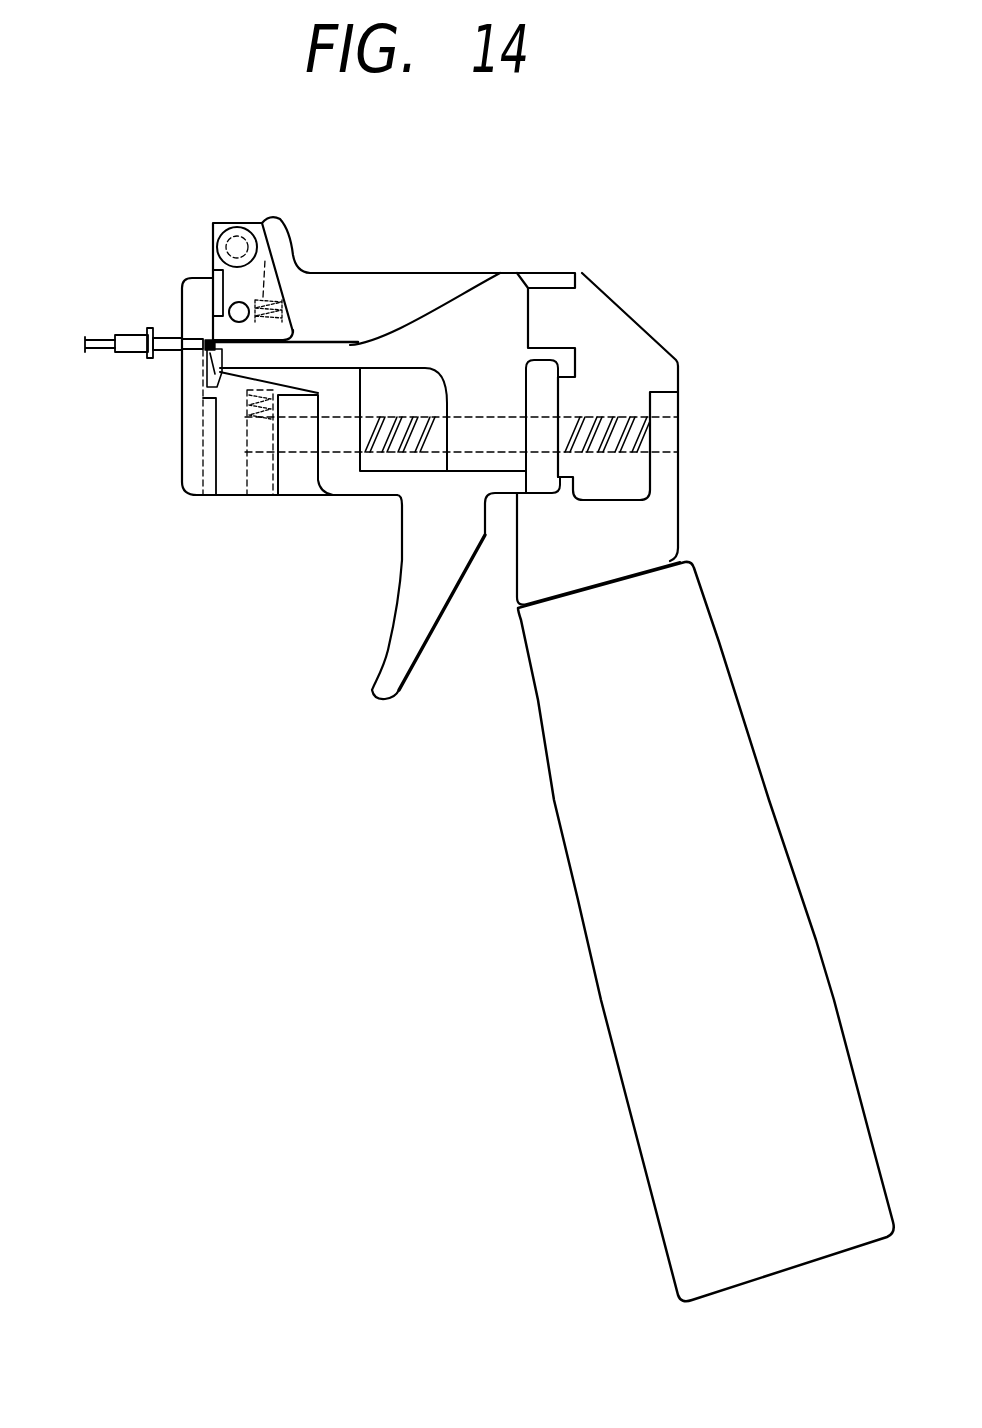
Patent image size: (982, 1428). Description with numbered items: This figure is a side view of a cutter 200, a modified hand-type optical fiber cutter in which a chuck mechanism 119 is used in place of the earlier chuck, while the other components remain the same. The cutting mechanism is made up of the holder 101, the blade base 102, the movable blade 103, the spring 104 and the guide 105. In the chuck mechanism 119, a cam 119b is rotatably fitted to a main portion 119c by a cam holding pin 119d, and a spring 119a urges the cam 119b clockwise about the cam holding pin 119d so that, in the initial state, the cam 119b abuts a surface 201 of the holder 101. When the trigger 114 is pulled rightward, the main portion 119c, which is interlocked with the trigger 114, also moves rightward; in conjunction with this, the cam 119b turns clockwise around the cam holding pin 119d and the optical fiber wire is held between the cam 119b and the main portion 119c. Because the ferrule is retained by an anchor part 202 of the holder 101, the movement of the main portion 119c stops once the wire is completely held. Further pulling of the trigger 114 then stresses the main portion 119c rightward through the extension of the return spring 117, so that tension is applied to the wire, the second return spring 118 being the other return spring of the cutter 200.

The holder 101 is at (198, 470).
The blade base 102 is at (232, 480).
The movable blade 103 is at (210, 380).
The spring 104 is at (265, 430).
The guide 105 is at (298, 430).
The trigger 114 is at (420, 628).
The return spring 117 is at (388, 460).
The return spring 118 is at (611, 422).
The chuck mechanism 119 is at (455, 160).
The spring 119a is at (265, 260).
The cam 119b is at (280, 283).
The main portion 119c is at (477, 323).
The cam holding pin 119d is at (222, 225).
The cutter 200 is at (650, 287).
The surface 201 is at (210, 320).
The anchor part 202 is at (178, 335).